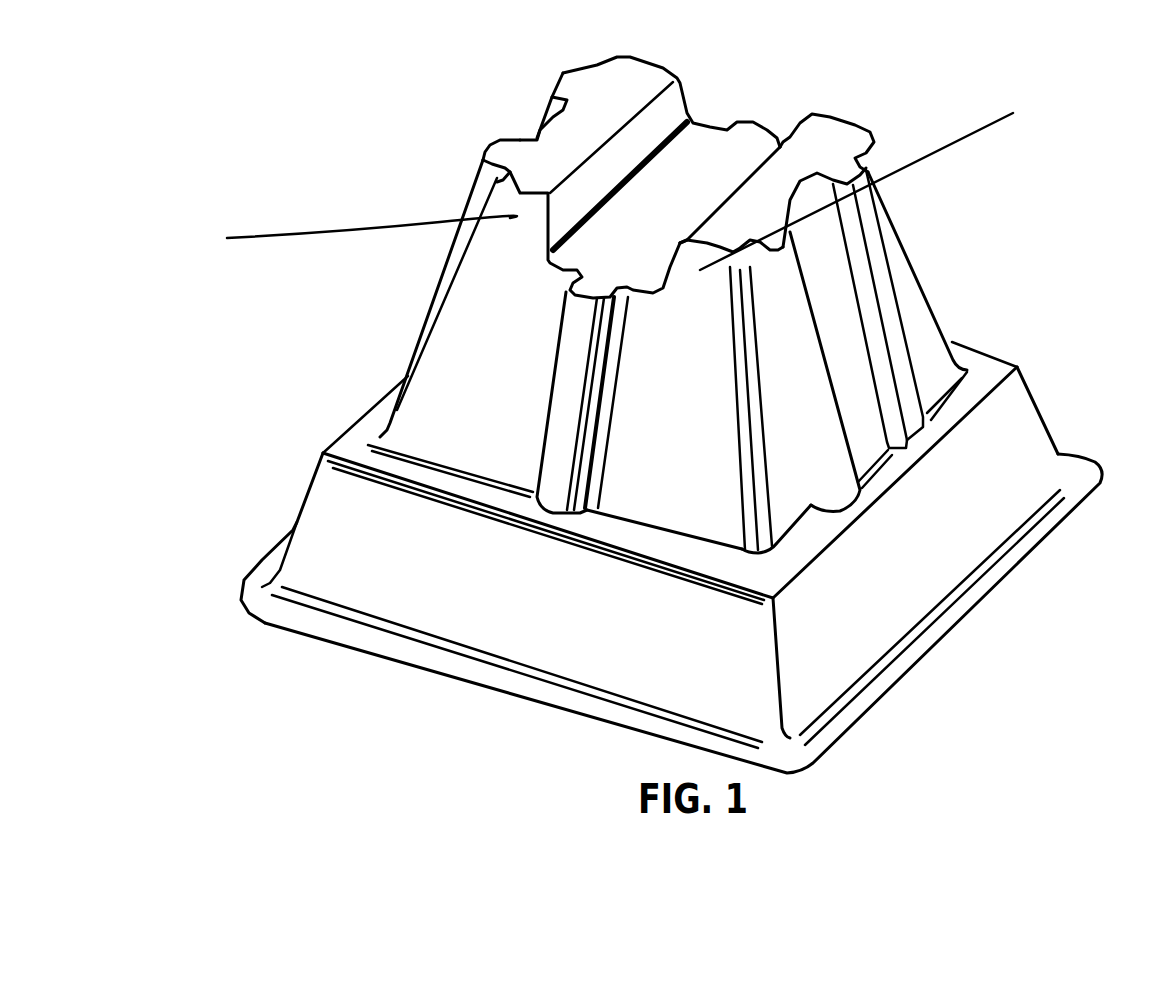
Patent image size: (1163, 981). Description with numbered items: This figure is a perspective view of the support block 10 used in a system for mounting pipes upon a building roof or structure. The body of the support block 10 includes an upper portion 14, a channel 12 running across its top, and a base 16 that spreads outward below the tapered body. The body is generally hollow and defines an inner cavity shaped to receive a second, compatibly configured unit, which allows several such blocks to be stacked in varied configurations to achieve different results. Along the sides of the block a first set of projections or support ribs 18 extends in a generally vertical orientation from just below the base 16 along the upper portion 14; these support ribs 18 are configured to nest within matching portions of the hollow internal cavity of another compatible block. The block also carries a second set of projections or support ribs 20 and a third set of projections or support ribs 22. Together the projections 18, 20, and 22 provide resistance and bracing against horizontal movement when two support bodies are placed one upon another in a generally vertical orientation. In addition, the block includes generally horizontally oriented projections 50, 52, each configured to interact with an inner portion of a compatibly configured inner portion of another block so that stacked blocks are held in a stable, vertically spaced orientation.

The support block 10 is at (1022, 367).
The channel 12 is at (713, 127).
The upper portion 14 is at (918, 245).
The base 16 is at (1027, 567).
The first set of projections or support ribs 18 is at (565, 353).
The second set of projections or support ribs 20 is at (460, 213).
The third set of projections or support ribs 22 is at (552, 97).
The generally horizontally oriented projection 50 is at (885, 179).
The generally horizontally oriented projection 52 is at (343, 241).